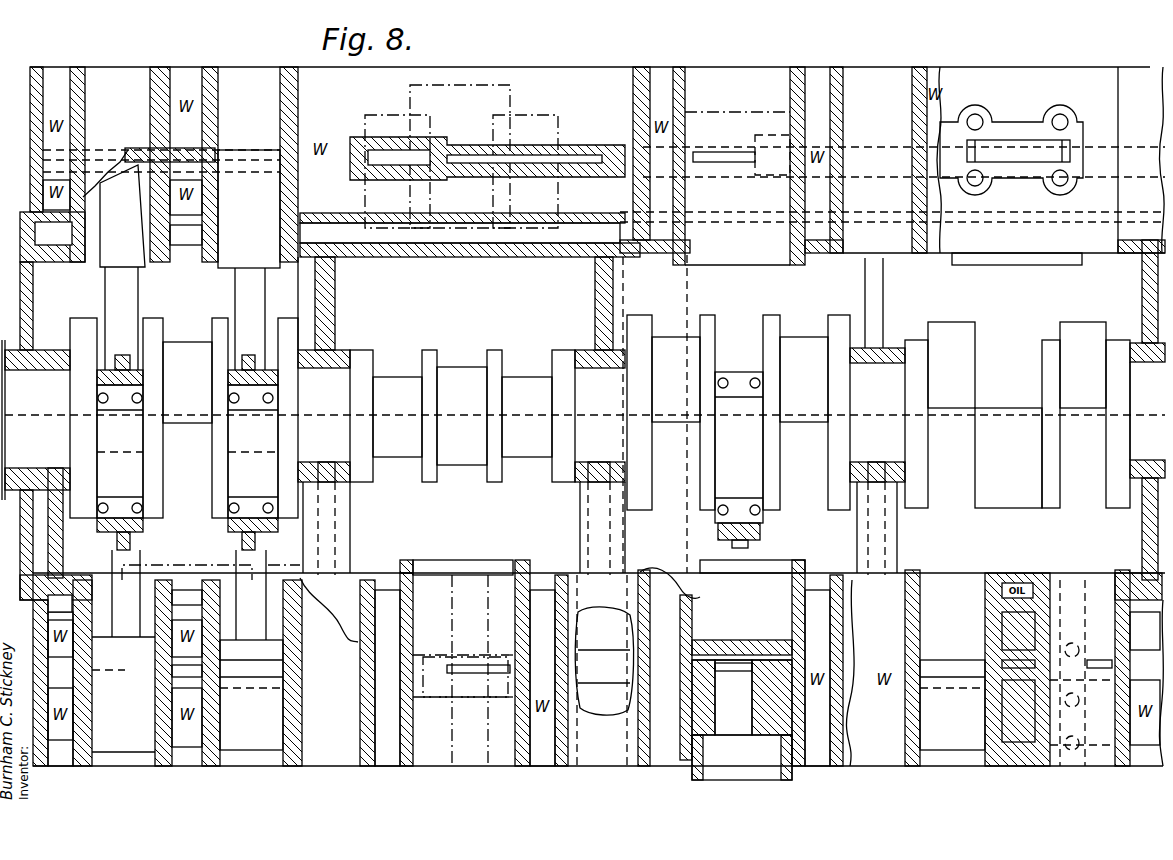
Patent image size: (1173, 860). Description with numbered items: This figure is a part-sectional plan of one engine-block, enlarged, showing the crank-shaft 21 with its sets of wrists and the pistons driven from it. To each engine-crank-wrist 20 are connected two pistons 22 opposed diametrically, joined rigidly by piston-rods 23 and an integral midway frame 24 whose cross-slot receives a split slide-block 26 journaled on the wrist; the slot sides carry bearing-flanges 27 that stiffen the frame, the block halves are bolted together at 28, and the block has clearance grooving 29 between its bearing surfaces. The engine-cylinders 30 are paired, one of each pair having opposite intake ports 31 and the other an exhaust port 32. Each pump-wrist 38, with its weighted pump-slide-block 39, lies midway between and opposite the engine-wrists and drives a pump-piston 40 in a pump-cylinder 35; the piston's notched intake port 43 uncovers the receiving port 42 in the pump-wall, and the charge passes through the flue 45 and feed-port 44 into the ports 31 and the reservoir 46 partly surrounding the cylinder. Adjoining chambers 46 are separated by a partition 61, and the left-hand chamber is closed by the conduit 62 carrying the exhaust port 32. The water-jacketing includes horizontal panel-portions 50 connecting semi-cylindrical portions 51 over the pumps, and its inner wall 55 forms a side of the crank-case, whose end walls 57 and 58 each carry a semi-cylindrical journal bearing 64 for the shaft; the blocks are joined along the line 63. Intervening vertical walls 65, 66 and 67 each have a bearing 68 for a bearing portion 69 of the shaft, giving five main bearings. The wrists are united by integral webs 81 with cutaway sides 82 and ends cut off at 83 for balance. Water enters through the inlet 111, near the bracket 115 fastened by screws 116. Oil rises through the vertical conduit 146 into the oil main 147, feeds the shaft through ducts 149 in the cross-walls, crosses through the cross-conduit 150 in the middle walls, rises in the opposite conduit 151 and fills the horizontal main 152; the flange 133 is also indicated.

The engine-crank-wrist 20 is at (601, 420).
The crank-shaft 21 is at (1140, 450).
The piston 22 is at (534, 104).
The piston-rod 23 is at (262, 642).
The midway frame 24 is at (122, 355).
The slide-block 26 is at (97, 403).
The bearing-flange 27 is at (145, 378).
The bolts 28 is at (270, 398).
The clearance grooving 29 is at (185, 451).
The engine-cylinder 30 is at (70, 87).
The intake port 31 is at (755, 157).
The exhaust port 32 is at (252, 165).
The pump-cylinder 35 is at (808, 122).
The pump-wrist 38 is at (602, 432).
The pump-slide-block 39 is at (735, 372).
The pump-piston 40 is at (725, 112).
The receiving port 42 is at (718, 162).
The intake port 43 is at (742, 757).
The feed-port 44 is at (750, 652).
The flue 45 is at (733, 697).
The reservoir 46 is at (470, 170).
The panel-portion 50 is at (870, 416).
The semi-cylindrical water-jacketing portion 51 is at (650, 90).
The wall 55 is at (490, 257).
The end wall 57 is at (33, 293).
The end wall 58 is at (1145, 318).
The partition 61 is at (590, 165).
The conduit 62 is at (440, 137).
The line of joining 63 is at (50, 418).
The journal bearing 64 is at (1150, 362).
The vertical wall 65 is at (335, 302).
The vertical wall 66 is at (596, 300).
The vertical wall 67 is at (883, 290).
The bearing 68 is at (601, 415).
The bearing portion 69 is at (305, 440).
The web 81 is at (1105, 500).
The cutaway sides 82 is at (370, 345).
The cut-off web end 83 is at (915, 340).
The inlet 111 is at (1160, 692).
The bracket 115 is at (1138, 668).
The screws 116 is at (1075, 645).
The end flange 133 is at (6, 393).
The vertical conduit 146 is at (670, 604).
The oil main 147 is at (965, 563).
The duct 149 is at (1150, 293).
The cross-conduit 150 is at (687, 290).
The vertical conduit 151 is at (661, 215).
The horizontal main 152 is at (1098, 258).